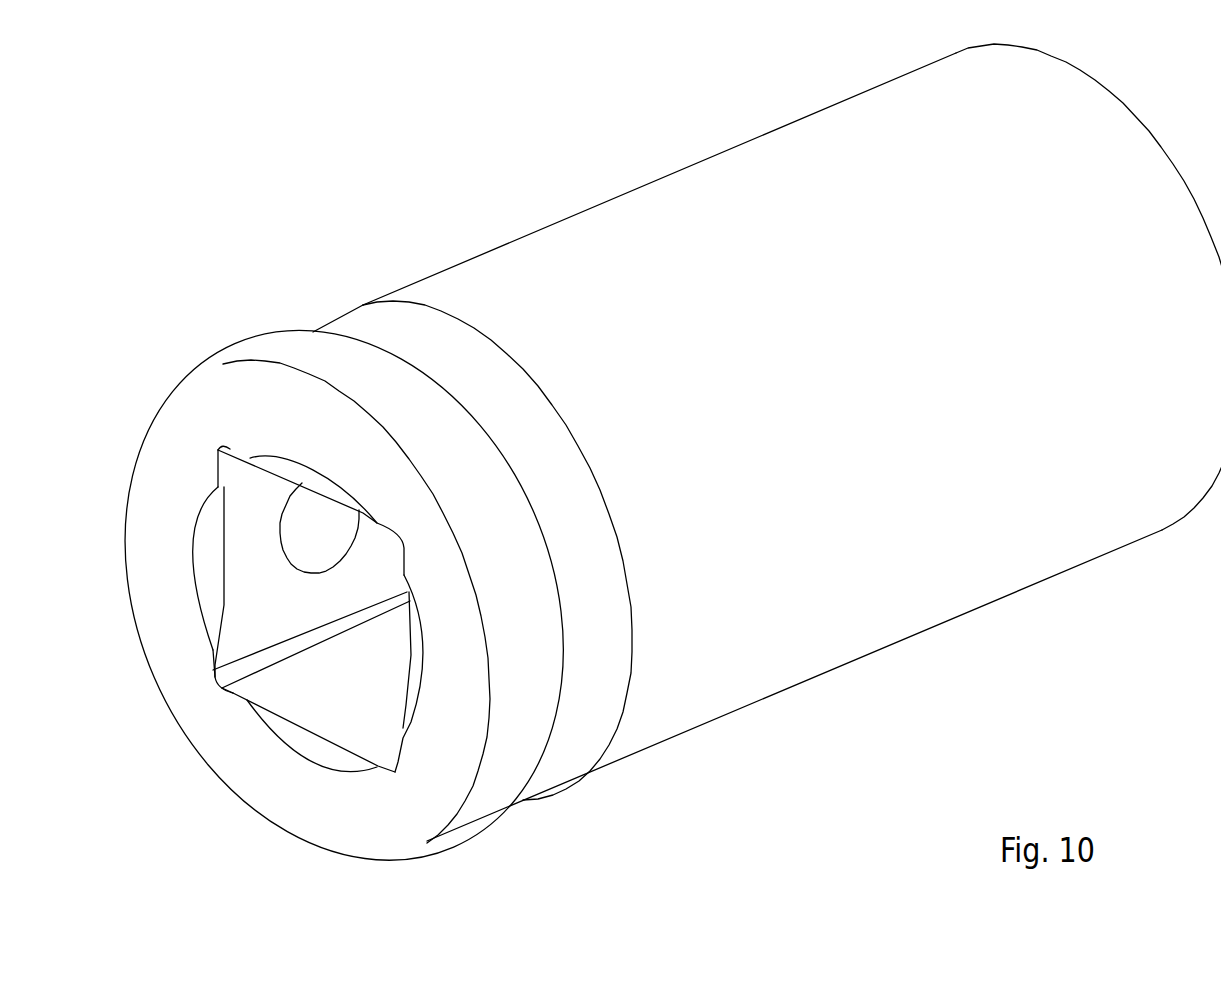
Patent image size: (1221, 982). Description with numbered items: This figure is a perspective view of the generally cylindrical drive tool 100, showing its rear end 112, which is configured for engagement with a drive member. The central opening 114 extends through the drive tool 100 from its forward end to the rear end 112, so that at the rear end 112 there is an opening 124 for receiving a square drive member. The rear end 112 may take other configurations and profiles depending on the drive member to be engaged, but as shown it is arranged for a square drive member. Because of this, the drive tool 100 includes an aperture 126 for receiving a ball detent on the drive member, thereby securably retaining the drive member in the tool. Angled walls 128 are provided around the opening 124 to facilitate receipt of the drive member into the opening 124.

The drive tool 100 is at (552, 158).
The rear end 112 is at (338, 438).
The central opening 114 is at (358, 643).
The opening 124 is at (270, 676).
The aperture 126 is at (312, 537).
The angled walls 128 is at (305, 473).